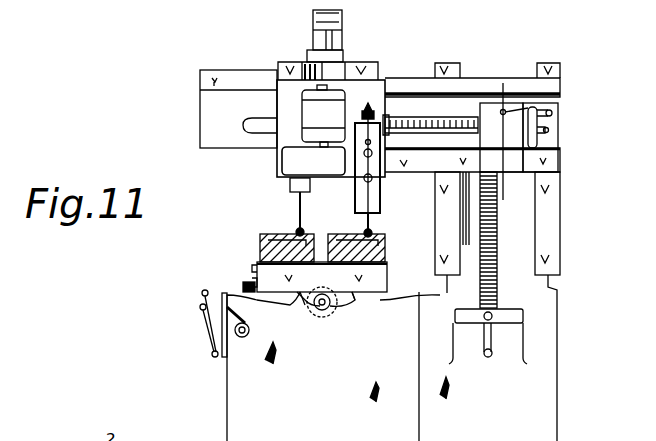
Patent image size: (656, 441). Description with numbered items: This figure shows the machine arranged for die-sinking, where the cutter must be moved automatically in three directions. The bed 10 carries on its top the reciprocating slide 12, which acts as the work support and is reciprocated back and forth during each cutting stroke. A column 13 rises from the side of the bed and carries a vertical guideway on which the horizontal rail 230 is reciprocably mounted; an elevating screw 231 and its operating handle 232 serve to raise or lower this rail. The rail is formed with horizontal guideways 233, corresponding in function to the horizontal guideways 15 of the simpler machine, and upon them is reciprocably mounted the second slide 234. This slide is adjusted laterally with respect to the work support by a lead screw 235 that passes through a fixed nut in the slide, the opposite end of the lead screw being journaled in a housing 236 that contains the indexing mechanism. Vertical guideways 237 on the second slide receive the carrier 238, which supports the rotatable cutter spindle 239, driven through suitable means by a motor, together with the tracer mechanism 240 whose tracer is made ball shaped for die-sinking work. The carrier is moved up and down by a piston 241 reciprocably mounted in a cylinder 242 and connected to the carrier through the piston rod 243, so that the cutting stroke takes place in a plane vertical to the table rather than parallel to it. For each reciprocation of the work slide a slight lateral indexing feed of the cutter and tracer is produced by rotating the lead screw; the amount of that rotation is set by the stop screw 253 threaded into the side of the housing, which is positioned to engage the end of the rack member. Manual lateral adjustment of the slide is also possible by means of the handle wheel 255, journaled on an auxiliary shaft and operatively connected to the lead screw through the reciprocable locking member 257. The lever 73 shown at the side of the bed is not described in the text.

The bed 10 is at (236, 377).
The reciprocating slide 12 is at (255, 268).
The column 13 is at (495, 86).
The horizontal guideways 15 is at (376, 99).
The lever 73 is at (240, 285).
The horizontal rail 230 is at (417, 83).
The elevating screw 231 is at (502, 255).
The operating handle 232 is at (480, 340).
The horizontal guideways 233 is at (228, 70).
The second slide 234 is at (366, 60).
The lead screw 235 is at (447, 118).
The housing 236 is at (560, 165).
The vertical guideways 237 is at (300, 53).
The carrier 238 is at (280, 153).
The cutter spindle 239 is at (318, 112).
The tracer mechanism 240 is at (380, 196).
The piston 241 is at (340, 30).
The cylinder 242 is at (309, 24).
The piston rod 243 is at (343, 60).
The stop screw 253 is at (530, 108).
The handle wheel 255 is at (552, 113).
The reciprocable locking member 257 is at (548, 130).